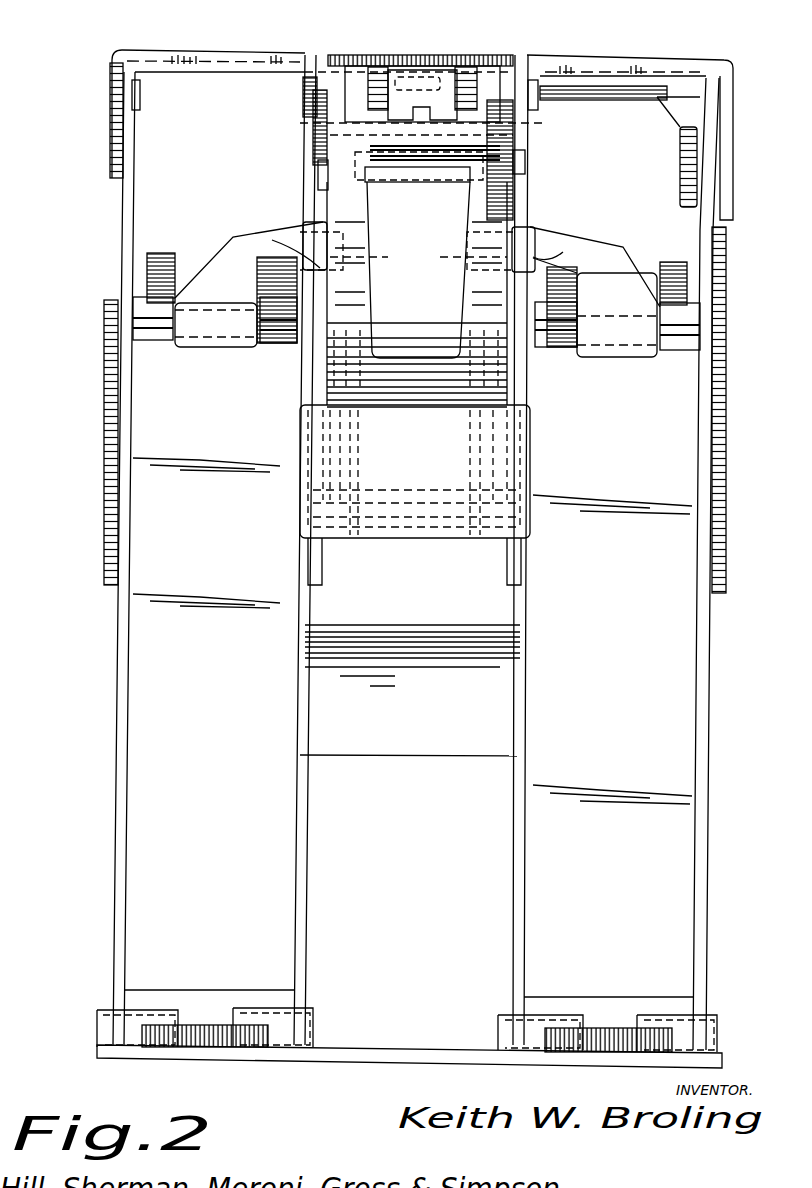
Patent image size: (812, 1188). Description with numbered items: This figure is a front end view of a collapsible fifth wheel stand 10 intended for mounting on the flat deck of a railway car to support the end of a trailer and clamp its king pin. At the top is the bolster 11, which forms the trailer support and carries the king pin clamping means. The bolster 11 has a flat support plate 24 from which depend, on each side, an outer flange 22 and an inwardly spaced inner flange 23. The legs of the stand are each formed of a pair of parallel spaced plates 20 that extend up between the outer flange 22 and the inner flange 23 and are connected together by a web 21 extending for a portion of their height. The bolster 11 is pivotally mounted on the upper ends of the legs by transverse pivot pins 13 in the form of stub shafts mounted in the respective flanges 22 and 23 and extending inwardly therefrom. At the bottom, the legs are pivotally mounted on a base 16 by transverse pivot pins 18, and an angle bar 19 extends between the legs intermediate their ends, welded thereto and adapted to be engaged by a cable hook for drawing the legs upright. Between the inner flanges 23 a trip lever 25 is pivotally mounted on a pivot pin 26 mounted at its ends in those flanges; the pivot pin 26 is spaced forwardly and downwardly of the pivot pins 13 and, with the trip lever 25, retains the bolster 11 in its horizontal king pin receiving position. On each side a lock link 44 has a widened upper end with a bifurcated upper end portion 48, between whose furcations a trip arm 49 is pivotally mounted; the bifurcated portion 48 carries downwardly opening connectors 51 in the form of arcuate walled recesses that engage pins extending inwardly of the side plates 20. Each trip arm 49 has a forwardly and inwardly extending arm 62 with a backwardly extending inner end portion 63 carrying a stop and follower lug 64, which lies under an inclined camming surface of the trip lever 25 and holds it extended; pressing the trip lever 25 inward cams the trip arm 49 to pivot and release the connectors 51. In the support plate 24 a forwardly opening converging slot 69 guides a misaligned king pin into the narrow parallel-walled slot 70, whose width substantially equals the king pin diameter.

The collapsible fifth wheel stand 10 is at (112, 732).
The bolster 11 is at (250, 51).
The pivot pins 13 is at (140, 96).
The base 16 is at (390, 1048).
The pivot pins 18 is at (316, 1025).
The angle bar 19 is at (445, 757).
The plates 20 is at (113, 885).
The web 21 is at (212, 917).
The outer flange 22 is at (110, 160).
The inner flange 23 is at (318, 165).
The support plate 24 is at (254, 76).
The trip lever 25 is at (443, 540).
The pivot pin 26 is at (347, 125).
The lock link 44 is at (132, 310).
The bifurcated upper end portion 48 is at (160, 252).
The trip arm 49 is at (229, 238).
The connectors 51 is at (143, 340).
The arm 62 is at (290, 206).
The inner end portion 63 is at (276, 242).
The stop and follower lug 64 is at (406, 294).
The converging slot 69 is at (480, 60).
The narrow slot 70 is at (426, 62).